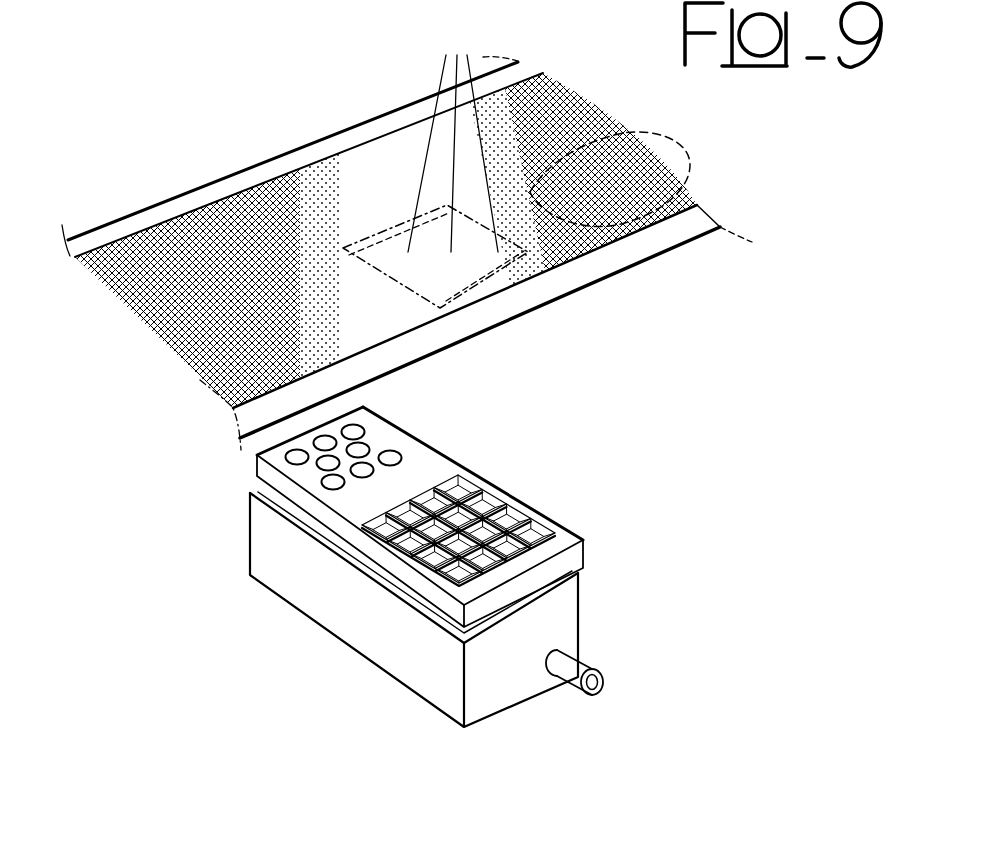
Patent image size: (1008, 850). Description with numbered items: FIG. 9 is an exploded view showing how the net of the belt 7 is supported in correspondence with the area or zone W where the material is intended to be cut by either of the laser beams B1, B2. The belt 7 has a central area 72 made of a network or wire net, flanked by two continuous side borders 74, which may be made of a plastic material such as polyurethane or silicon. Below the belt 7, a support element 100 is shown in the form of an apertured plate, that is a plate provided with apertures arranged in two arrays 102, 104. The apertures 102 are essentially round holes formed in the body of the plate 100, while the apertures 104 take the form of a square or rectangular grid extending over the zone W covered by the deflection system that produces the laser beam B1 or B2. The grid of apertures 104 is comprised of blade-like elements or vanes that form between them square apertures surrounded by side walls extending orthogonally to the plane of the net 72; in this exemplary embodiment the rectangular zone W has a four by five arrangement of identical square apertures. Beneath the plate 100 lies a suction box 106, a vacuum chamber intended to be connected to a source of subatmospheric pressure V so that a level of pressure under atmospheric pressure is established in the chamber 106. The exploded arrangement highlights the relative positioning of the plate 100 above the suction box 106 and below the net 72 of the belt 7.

The belt 7 is at (212, 151).
The laser beam B1 is at (356, 153).
The laser beam B2 is at (446, 76).
The central area 72 is at (610, 207).
The side borders 74 is at (167, 212).
The area or zone W is at (407, 256).
The support element 100 is at (482, 555).
The apertures 102 is at (405, 418).
The apertures 104 is at (527, 500).
The suction box 106 is at (447, 610).
The source of subatmospheric pressure V is at (655, 728).